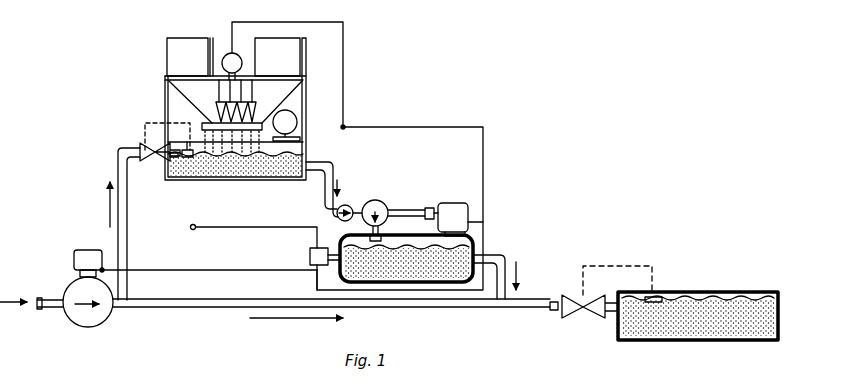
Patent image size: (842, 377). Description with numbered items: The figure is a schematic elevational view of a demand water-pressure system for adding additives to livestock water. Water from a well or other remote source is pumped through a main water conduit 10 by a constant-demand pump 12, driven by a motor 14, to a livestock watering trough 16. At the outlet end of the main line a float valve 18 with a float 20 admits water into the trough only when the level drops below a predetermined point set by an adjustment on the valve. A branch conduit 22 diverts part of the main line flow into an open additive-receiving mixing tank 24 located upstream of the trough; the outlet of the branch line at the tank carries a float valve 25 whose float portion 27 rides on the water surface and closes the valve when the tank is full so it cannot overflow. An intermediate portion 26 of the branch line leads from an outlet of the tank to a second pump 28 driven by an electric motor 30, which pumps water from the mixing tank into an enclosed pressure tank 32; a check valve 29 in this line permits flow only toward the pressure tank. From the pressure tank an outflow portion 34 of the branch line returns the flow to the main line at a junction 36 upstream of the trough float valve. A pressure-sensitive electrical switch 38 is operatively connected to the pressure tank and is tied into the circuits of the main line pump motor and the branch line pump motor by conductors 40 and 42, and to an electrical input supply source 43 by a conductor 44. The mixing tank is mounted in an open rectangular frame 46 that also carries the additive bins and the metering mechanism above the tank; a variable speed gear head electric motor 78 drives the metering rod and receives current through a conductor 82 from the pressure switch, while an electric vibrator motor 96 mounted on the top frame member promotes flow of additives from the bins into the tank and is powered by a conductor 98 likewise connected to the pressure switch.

The main water conduit 10 is at (458, 308).
The constant-demand pump 12 is at (65, 292).
The motor 14 is at (73, 258).
The livestock watering trough 16 is at (778, 307).
The float valve 18 is at (583, 305).
The float 20 is at (657, 297).
The branch conduit 22 is at (118, 168).
The mixing tank 24 is at (285, 178).
The float valve 25 is at (142, 144).
The float portion 27 is at (185, 148).
The intermediate portion of the branch line 26 is at (344, 176).
The second pump 28 is at (387, 202).
The check valve 29 is at (348, 203).
The electric motor 30 is at (453, 203).
The pressure tank 32 is at (410, 283).
The outflow portion of the branch line 34 is at (512, 262).
The junction 36 is at (515, 302).
The pressure-sensitive electrical switch 38 is at (320, 248).
The conductor 40 is at (188, 270).
The conductor 42 is at (318, 292).
The electrical input supply source 43 is at (191, 225).
The conductor 44 is at (262, 227).
The open rectangular frame 46 is at (305, 97).
The variable speed gear head electric motor 78 is at (303, 109).
The conductor 82 is at (483, 143).
The electric vibrator motor 96 is at (231, 53).
The conductor 98 is at (343, 22).